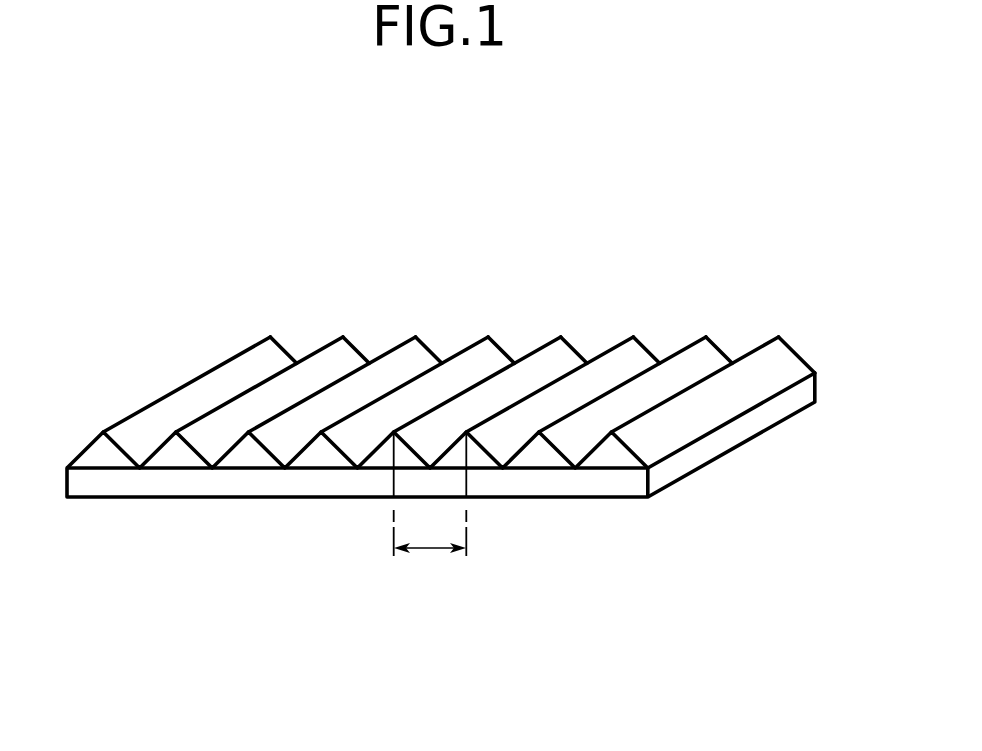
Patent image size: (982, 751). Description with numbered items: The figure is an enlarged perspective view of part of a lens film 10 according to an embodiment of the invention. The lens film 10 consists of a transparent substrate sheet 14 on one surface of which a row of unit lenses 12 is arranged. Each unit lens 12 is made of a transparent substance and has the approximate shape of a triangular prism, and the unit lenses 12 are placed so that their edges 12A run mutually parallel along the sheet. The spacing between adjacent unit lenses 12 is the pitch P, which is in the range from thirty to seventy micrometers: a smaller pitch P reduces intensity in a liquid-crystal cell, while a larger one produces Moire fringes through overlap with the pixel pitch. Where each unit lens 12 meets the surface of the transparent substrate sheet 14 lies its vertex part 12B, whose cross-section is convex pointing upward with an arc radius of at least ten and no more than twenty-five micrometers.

The lens film 10 is at (554, 248).
The unit lens 12 is at (170, 458).
The edge 12A is at (715, 368).
The vertex part 12B is at (247, 460).
The transparent substrate sheet 14 is at (625, 485).
The pitch P is at (430, 494).